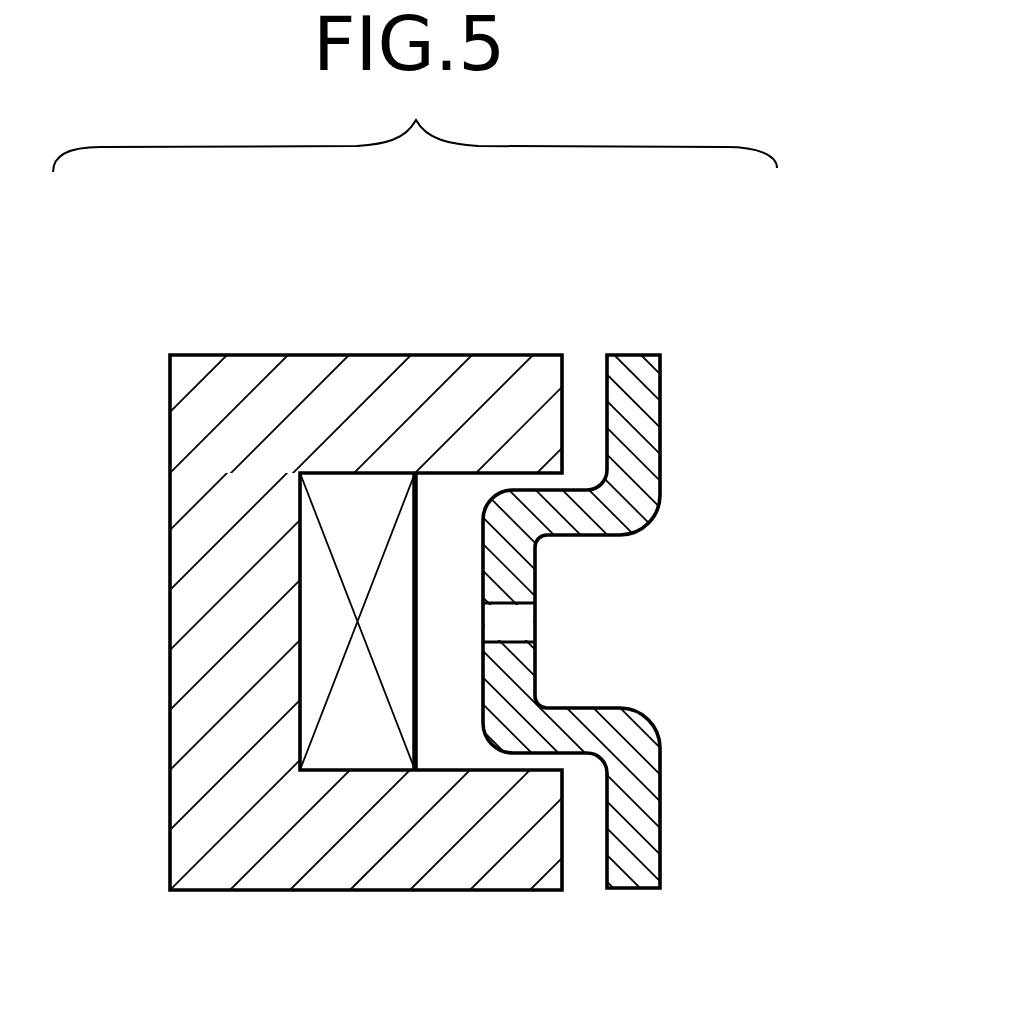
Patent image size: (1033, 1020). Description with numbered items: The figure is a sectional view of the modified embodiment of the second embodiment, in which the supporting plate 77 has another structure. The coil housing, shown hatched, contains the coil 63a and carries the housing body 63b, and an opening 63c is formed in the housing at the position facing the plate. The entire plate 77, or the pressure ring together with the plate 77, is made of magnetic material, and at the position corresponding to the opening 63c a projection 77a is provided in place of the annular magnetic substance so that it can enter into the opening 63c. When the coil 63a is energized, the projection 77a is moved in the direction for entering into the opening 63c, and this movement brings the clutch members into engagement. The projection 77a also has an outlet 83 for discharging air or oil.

The coil 63a is at (350, 520).
The core body 63b is at (360, 355).
The opening 63c is at (428, 767).
The supporting plate 77 is at (658, 427).
The projection 77a is at (540, 540).
The outlet 83 is at (522, 628).